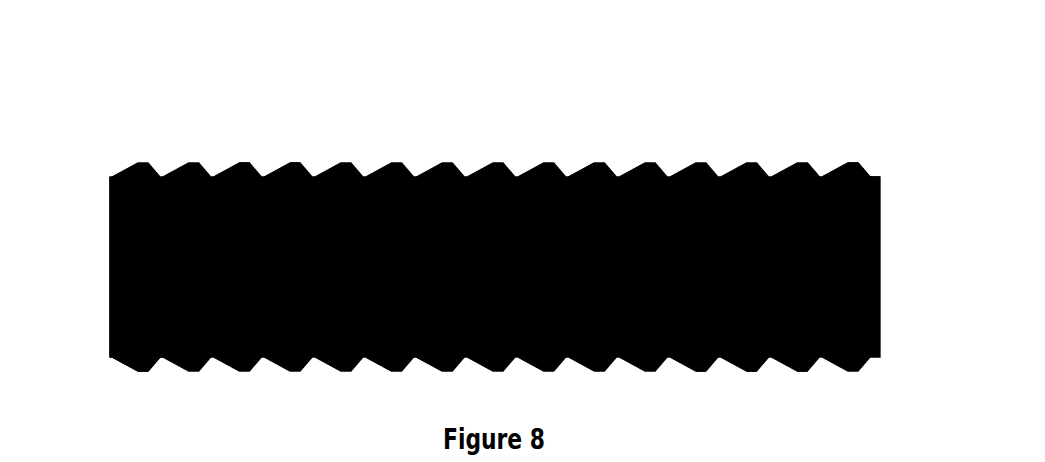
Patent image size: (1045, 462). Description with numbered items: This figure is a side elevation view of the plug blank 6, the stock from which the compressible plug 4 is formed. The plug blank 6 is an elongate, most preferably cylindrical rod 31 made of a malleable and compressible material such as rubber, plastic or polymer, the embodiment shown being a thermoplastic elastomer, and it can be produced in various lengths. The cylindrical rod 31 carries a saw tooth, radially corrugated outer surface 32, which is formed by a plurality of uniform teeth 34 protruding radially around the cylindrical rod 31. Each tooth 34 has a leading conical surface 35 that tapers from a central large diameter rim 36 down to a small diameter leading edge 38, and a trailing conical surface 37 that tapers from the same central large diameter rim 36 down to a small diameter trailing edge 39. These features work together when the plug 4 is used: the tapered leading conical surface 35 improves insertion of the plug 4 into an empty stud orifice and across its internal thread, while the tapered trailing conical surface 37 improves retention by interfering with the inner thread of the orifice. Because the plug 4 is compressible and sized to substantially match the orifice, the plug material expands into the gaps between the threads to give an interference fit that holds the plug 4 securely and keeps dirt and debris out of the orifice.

The plug 4 is at (436, 158).
The plug blank 6 is at (193, 120).
The cylindrical rod 31 is at (102, 237).
The outer surface 32 is at (587, 158).
The tooth 34 is at (289, 157).
The leading conical surface 35 is at (858, 162).
The central large diameter rim 36 is at (848, 153).
The trailing conical surface 37 is at (830, 162).
The leading edge 38 is at (872, 170).
The trailing edge 39 is at (812, 168).